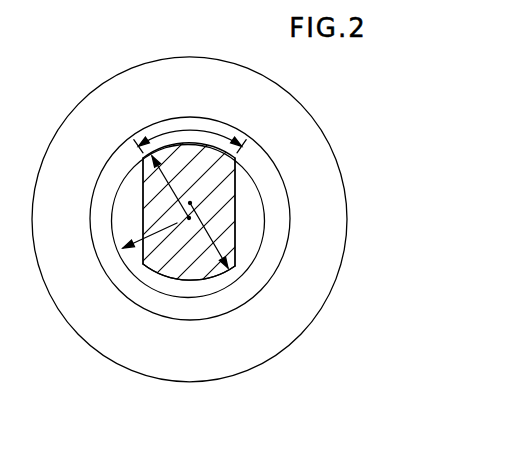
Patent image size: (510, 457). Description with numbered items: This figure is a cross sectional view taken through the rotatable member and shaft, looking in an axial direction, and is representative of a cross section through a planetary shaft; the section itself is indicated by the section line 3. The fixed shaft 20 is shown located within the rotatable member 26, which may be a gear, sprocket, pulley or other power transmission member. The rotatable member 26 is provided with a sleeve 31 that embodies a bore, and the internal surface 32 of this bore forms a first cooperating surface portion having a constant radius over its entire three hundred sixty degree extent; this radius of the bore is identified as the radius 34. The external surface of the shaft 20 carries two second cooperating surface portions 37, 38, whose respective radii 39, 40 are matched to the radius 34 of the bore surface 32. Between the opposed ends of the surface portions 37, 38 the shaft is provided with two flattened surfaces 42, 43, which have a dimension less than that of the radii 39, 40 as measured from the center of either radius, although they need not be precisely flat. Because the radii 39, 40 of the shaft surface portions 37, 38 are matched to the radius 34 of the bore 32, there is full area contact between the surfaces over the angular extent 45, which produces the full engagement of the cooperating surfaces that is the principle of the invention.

The section line 3- 3 is at (190, 51).
The shaft 20 is at (240, 216).
The rotatable member 26 is at (100, 98).
The sleeve 31 is at (118, 162).
The internal surface of the bore 32 is at (114, 185).
The radius of surface bore 34 is at (143, 229).
The second cooperating surface portion 37 is at (210, 140).
The second cooperating surface portion 38 is at (205, 283).
The radius of surface portion 39 is at (166, 172).
The radius of surface portion 40 is at (210, 232).
The flattened surface 42 is at (143, 207).
The flattened surface 43 is at (237, 188).
The angular extent 45 is at (188, 131).